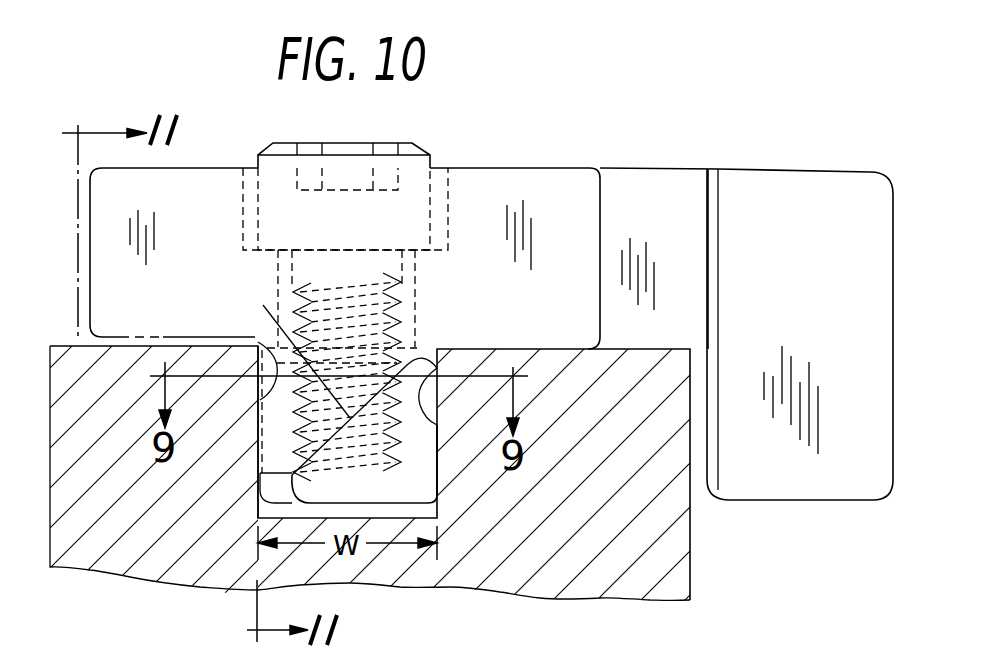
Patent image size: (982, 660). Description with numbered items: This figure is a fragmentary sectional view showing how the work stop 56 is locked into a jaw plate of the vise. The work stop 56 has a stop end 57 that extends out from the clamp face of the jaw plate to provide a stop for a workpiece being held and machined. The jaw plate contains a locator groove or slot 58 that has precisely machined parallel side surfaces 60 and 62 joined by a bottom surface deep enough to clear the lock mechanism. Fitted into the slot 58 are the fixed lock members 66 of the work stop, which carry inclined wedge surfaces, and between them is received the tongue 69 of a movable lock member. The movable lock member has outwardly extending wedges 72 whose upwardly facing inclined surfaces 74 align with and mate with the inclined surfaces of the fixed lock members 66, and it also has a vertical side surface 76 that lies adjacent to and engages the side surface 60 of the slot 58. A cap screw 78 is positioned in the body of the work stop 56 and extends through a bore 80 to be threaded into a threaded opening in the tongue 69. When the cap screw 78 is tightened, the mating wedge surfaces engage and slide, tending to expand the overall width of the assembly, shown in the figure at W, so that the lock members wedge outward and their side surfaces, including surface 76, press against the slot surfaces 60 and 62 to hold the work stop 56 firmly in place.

The work stop 56 is at (534, 190).
The stop end 57 is at (792, 200).
The locator groove or slot 58 is at (290, 512).
The side surface 60 is at (440, 352).
The side surface 62 is at (258, 342).
The fixed lock member 66 is at (258, 440).
The tongue 69 is at (263, 475).
The wedge 72 is at (408, 393).
The inclined surface 74 is at (289, 349).
The vertical side surface 76 is at (440, 470).
The cap screw 78 is at (417, 148).
The bore 80 is at (275, 286).